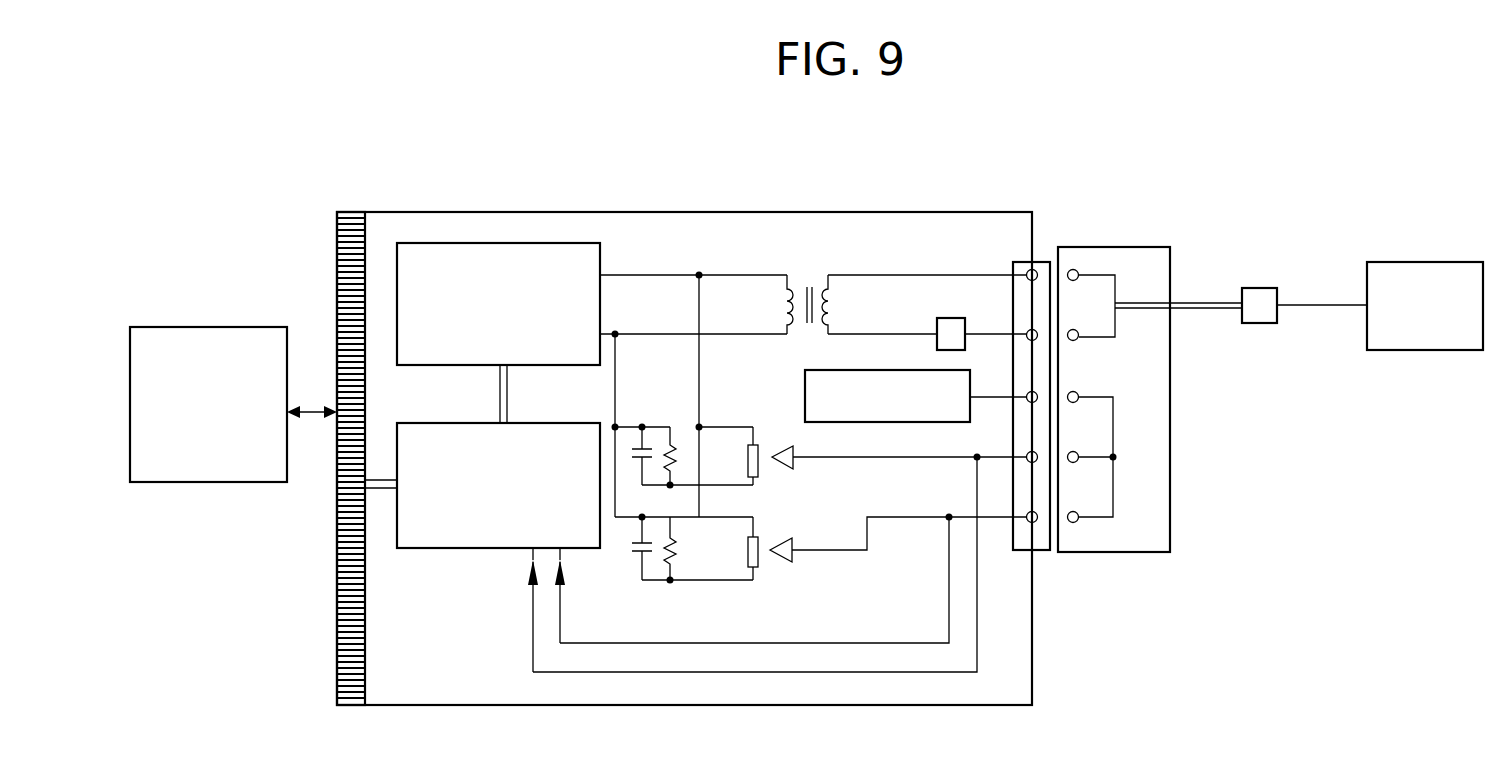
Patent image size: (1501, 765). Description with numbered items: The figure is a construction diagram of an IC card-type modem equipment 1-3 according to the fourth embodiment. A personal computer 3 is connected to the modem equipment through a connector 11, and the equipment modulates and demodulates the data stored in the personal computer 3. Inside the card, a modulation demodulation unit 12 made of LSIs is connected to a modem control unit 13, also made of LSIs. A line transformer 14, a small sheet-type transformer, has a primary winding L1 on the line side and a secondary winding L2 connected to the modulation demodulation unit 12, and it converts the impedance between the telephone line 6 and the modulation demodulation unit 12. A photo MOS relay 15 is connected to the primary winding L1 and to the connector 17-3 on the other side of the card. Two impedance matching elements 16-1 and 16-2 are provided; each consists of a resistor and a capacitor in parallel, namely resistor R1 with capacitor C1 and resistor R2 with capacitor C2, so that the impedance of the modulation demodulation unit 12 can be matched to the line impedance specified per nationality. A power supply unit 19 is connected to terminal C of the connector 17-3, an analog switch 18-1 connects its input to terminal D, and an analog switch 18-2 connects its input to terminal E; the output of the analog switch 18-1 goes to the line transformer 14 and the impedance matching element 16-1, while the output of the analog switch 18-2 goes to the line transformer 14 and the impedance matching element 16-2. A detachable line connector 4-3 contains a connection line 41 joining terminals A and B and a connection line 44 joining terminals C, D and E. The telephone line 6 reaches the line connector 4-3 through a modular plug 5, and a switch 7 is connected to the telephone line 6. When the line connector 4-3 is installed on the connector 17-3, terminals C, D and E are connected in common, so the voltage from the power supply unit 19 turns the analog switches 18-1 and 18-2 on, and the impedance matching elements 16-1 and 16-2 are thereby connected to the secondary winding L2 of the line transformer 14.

The IC card-type modem equipment 1-3 is at (483, 212).
The connector 11 is at (337, 250).
The personal computer 3 is at (208, 327).
The modulation demodulation unit 12 is at (440, 365).
The modem control unit 13 is at (437, 548).
The line transformer 14 is at (805, 279).
The primary winding L1 is at (808, 287).
The secondary winding L2 is at (764, 304).
The photo MOS relay 15 is at (950, 318).
The impedance matching element 16-1 is at (686, 445).
The impedance matching element 16-2 is at (664, 578).
The capacitor C1 is at (637, 474).
The resistor R1 is at (636, 425).
The capacitor C2 is at (625, 552).
The resistor R2 is at (645, 590).
The analog switch 18-1 is at (771, 466).
The analog switch 18-2 is at (770, 558).
The power supply unit 19 is at (805, 395).
The connector 17-3 is at (1045, 262).
The line connector 4-3 is at (1114, 367).
The connection line 41 is at (1117, 292).
The connection line 44 is at (1113, 445).
The modular plug 5 is at (1258, 288).
The telephone line 6 is at (1310, 310).
The switch 7 is at (1415, 262).